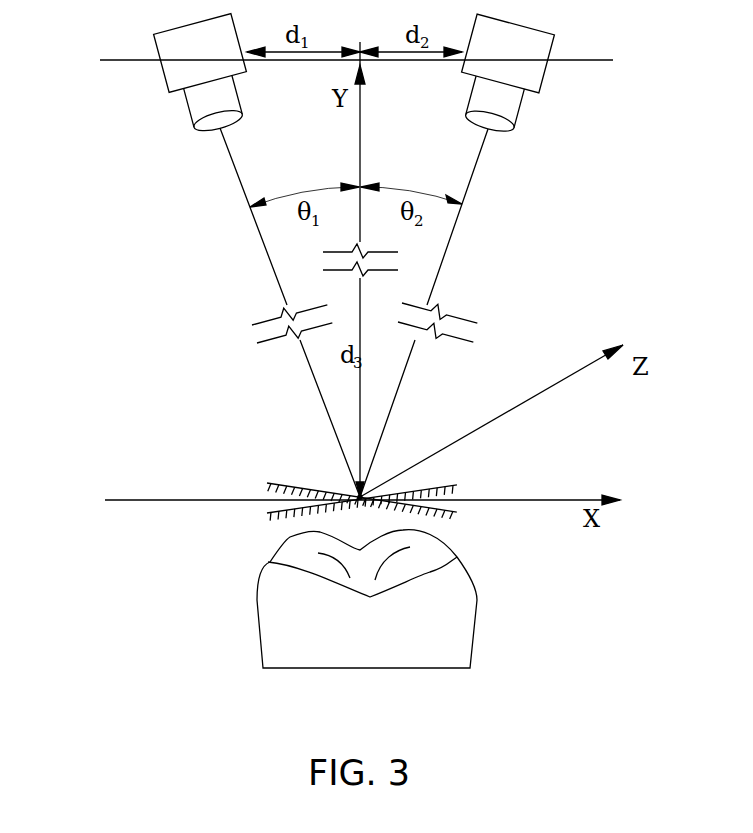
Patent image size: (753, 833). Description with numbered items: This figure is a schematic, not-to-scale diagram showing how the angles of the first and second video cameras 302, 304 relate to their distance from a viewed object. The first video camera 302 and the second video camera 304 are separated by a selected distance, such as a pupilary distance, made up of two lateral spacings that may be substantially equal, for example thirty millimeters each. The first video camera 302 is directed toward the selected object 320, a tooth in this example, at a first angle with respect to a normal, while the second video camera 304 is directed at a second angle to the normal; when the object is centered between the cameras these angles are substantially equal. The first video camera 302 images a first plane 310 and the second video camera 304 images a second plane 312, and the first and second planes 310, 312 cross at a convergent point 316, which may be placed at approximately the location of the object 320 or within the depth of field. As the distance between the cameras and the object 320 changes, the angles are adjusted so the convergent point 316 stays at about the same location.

The first video camera 302 is at (158, 75).
The second video camera 304 is at (543, 75).
The first plane 310 is at (450, 488).
The second plane 312 is at (270, 485).
The convergent point 316 is at (357, 494).
The selected object 320 is at (477, 627).